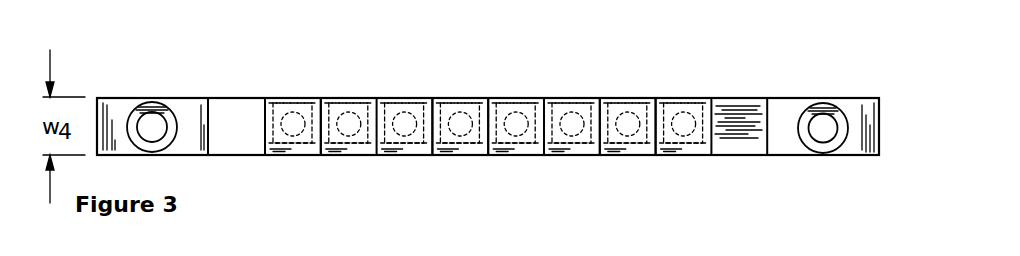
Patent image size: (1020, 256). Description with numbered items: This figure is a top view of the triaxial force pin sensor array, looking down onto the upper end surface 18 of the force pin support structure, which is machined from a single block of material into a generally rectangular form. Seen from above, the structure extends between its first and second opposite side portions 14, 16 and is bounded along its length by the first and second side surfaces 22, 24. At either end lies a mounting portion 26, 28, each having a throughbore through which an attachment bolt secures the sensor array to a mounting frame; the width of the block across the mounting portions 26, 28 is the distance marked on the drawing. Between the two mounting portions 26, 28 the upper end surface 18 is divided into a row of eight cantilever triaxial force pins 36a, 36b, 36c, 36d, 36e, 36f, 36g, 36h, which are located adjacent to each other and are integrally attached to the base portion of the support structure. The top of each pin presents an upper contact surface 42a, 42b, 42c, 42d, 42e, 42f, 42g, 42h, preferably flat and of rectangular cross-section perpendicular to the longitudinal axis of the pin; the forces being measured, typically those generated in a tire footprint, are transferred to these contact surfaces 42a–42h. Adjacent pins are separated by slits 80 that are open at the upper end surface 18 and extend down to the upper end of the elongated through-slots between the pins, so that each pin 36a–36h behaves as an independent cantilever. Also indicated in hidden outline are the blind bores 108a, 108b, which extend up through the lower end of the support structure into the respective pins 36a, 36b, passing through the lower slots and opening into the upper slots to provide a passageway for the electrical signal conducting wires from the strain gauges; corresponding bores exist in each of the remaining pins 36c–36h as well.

The first side portion 14 is at (247, 157).
The second side portion 16 is at (218, 97).
The upper end surface 18 is at (232, 117).
The first side surface 22 is at (880, 125).
The second side surface 24 is at (97, 122).
The mounting portion 26 is at (860, 107).
The mounting portion 28 is at (112, 110).
The cantilever triaxial force pin 36a is at (664, 102).
The cantilever triaxial force pin 36b is at (608, 102).
The cantilever triaxial force pin 36c is at (552, 102).
The cantilever triaxial force pin 36d is at (496, 102).
The cantilever triaxial force pin 36e is at (440, 102).
The cantilever triaxial force pin 36f is at (385, 102).
The cantilever triaxial force pin 36g is at (329, 102).
The cantilever triaxial force pin 36h is at (273, 102).
The upper contact surface 42a is at (701, 100).
The upper contact surface 42b is at (645, 100).
The upper contact surface 42c is at (589, 100).
The upper contact surface 42d is at (533, 100).
The upper contact surface 42e is at (477, 100).
The upper contact surface 42f is at (422, 100).
The upper contact surface 42g is at (366, 100).
The upper contact surface 42h is at (310, 100).
The slits 80 is at (321, 157).
The blind bore 108a is at (675, 142).
The blind bore 108b is at (615, 140).